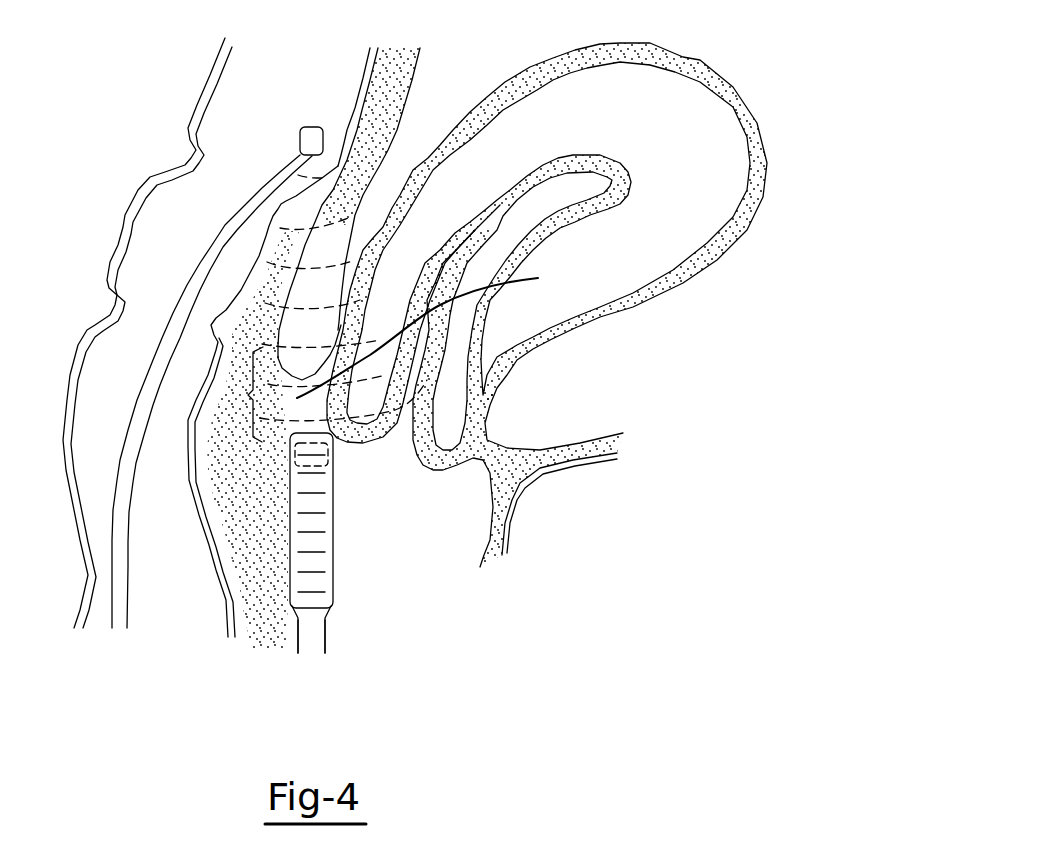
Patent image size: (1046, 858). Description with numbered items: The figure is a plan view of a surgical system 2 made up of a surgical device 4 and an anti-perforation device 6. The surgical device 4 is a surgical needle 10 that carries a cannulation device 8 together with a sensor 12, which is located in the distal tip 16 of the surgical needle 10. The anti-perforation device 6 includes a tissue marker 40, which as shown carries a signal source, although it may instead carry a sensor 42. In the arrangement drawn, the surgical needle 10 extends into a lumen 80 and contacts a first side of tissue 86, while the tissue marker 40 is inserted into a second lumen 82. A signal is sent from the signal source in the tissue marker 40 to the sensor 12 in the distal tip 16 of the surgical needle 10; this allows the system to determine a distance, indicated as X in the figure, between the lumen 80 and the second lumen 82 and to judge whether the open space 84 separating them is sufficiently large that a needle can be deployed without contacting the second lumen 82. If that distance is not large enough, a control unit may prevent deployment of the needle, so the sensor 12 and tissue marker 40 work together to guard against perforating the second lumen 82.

The surgical system 2 is at (772, 70).
The surgical device 4 is at (387, 628).
The anti-perforation device 6 is at (150, 88).
The cannulation device 8 is at (320, 517).
The surgical needle 10 is at (318, 563).
The sensor 12 is at (333, 461).
The distal tip 16 is at (270, 452).
The tissue marker 40 is at (313, 100).
The sensor 42 is at (303, 136).
The lumen 80 is at (444, 562).
The second lumen 82 is at (151, 618).
The open space 84 is at (466, 70).
The tissue 86 is at (432, 331).
The distance X' X is at (248, 395).